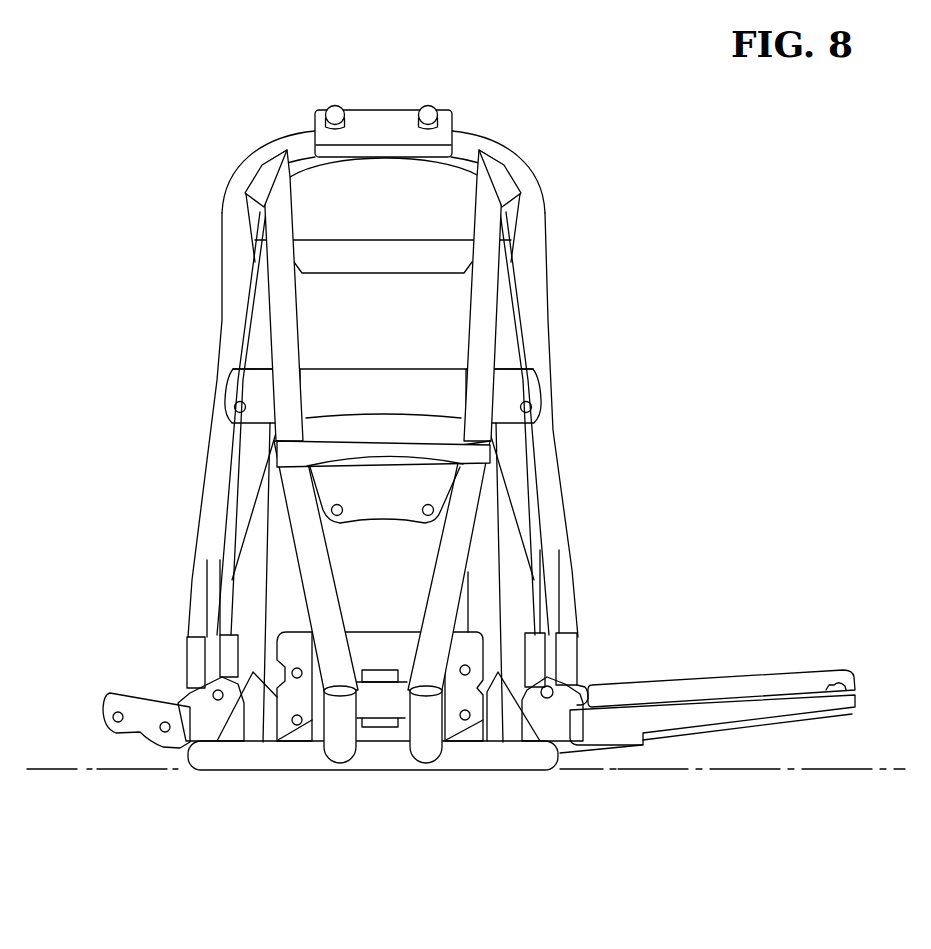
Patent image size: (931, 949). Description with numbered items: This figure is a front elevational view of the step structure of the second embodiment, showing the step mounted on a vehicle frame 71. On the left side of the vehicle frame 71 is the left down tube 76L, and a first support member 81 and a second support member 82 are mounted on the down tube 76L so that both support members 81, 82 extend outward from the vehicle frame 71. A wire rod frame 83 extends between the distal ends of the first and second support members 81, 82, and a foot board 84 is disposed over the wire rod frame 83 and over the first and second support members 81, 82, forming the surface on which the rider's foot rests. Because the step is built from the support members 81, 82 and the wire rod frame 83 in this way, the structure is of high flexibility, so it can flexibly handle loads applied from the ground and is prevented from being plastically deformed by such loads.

The vehicle frame 71 is at (223, 162).
The left down tube 76L is at (492, 758).
The foot board 84 is at (700, 677).
The wire rod frame 83 is at (822, 686).
The second support member 82 is at (720, 722).
The first support member 81 is at (784, 722).